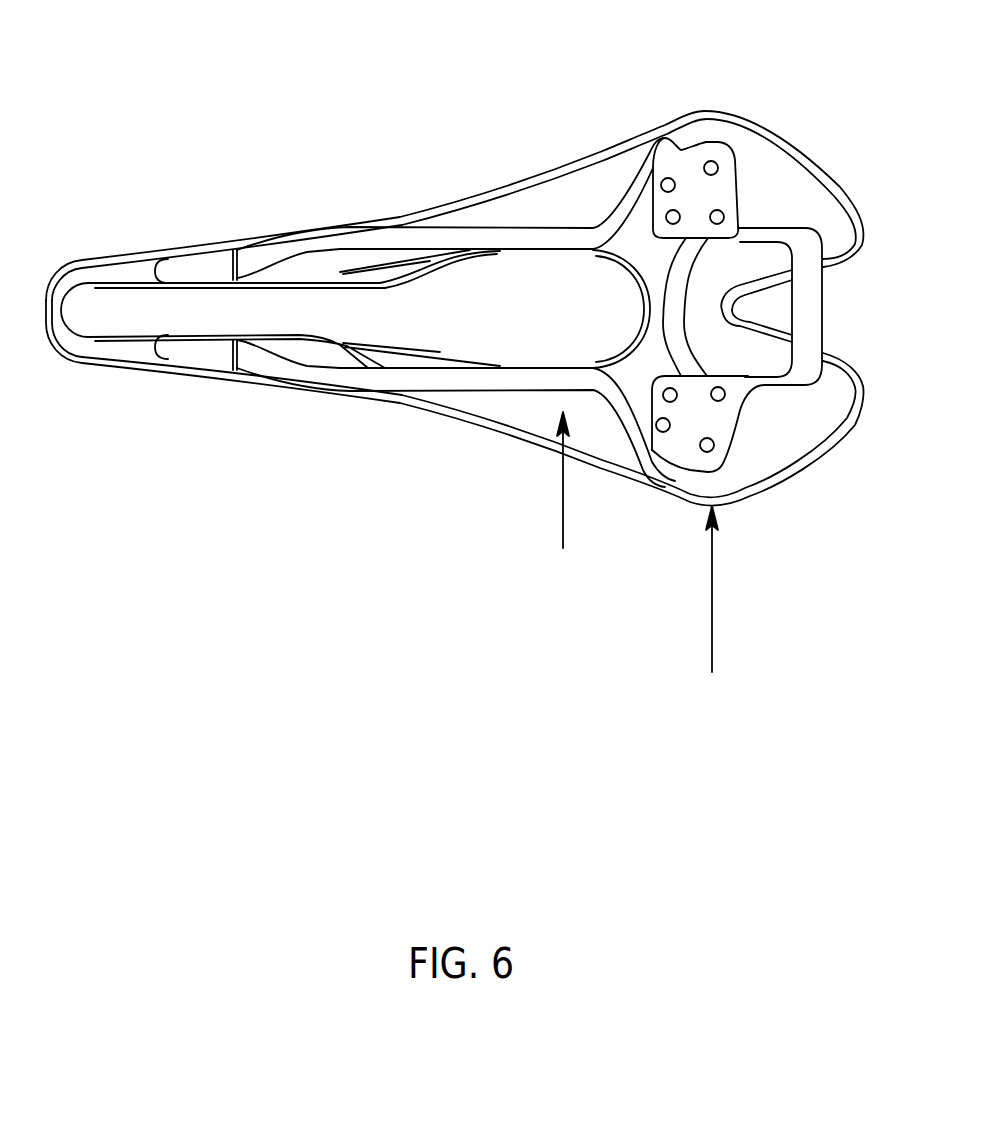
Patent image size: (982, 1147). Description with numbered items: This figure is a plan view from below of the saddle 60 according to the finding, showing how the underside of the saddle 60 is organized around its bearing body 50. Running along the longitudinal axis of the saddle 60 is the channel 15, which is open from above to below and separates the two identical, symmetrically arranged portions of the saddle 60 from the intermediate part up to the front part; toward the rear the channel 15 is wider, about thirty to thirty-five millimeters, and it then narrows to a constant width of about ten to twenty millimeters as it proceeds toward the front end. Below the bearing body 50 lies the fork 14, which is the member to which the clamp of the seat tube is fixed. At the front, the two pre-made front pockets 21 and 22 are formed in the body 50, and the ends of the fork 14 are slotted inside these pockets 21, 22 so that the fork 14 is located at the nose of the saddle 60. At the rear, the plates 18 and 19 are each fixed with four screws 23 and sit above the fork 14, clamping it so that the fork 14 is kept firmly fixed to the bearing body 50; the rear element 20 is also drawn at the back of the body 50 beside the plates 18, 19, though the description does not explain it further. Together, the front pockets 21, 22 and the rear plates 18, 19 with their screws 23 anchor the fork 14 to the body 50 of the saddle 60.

The fork 14 is at (383, 380).
The channel 15 is at (460, 307).
The plate 18 is at (695, 427).
The plate 19 is at (693, 183).
The rail 20 is at (832, 312).
The front pocket 21 is at (208, 263).
The front pocket 22 is at (200, 350).
The screws 23 is at (714, 162).
The bearing body 50 is at (563, 491).
The saddle 60 is at (707, 602).